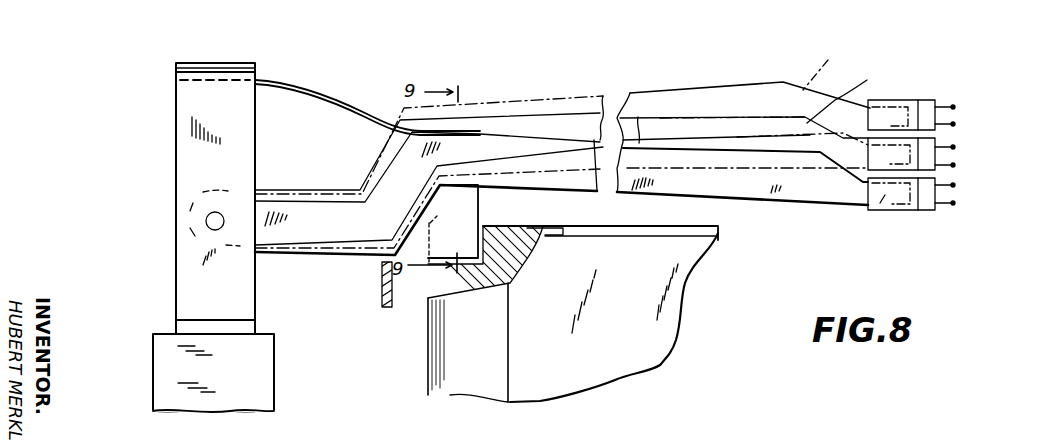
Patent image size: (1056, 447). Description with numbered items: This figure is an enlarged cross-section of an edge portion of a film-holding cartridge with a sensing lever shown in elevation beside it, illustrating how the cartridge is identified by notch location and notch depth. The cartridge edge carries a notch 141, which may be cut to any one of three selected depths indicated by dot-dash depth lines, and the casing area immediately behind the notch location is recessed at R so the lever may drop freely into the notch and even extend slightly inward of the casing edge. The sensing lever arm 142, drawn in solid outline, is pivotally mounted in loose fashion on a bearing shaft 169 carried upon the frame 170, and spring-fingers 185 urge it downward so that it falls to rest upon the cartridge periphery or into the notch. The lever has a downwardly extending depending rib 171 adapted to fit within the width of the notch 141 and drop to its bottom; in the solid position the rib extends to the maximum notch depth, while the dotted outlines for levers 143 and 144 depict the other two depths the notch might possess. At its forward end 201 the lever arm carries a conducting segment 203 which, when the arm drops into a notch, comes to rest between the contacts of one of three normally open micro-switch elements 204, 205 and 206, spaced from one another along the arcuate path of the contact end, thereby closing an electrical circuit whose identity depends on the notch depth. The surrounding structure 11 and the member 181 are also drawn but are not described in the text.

The workpiece / machine frame 11 is at (668, 323).
The notch 141 is at (446, 231).
The lever arm 142 is at (747, 188).
The lever 143 is at (840, 94).
The lever 144 is at (741, 82).
The bearing shaft 169 is at (206, 224).
The frame 170 is at (181, 124).
The depending rib 171 is at (468, 221).
The stop member 181 is at (380, 284).
The spring-fingers 185 is at (320, 74).
The forward end 201 is at (833, 224).
The conducting segment 203 is at (876, 211).
The micro-switch element 204 is at (905, 100).
The micro-switch element 205 is at (935, 143).
The micro-switch element 206 is at (897, 210).
The recess R is at (483, 250).